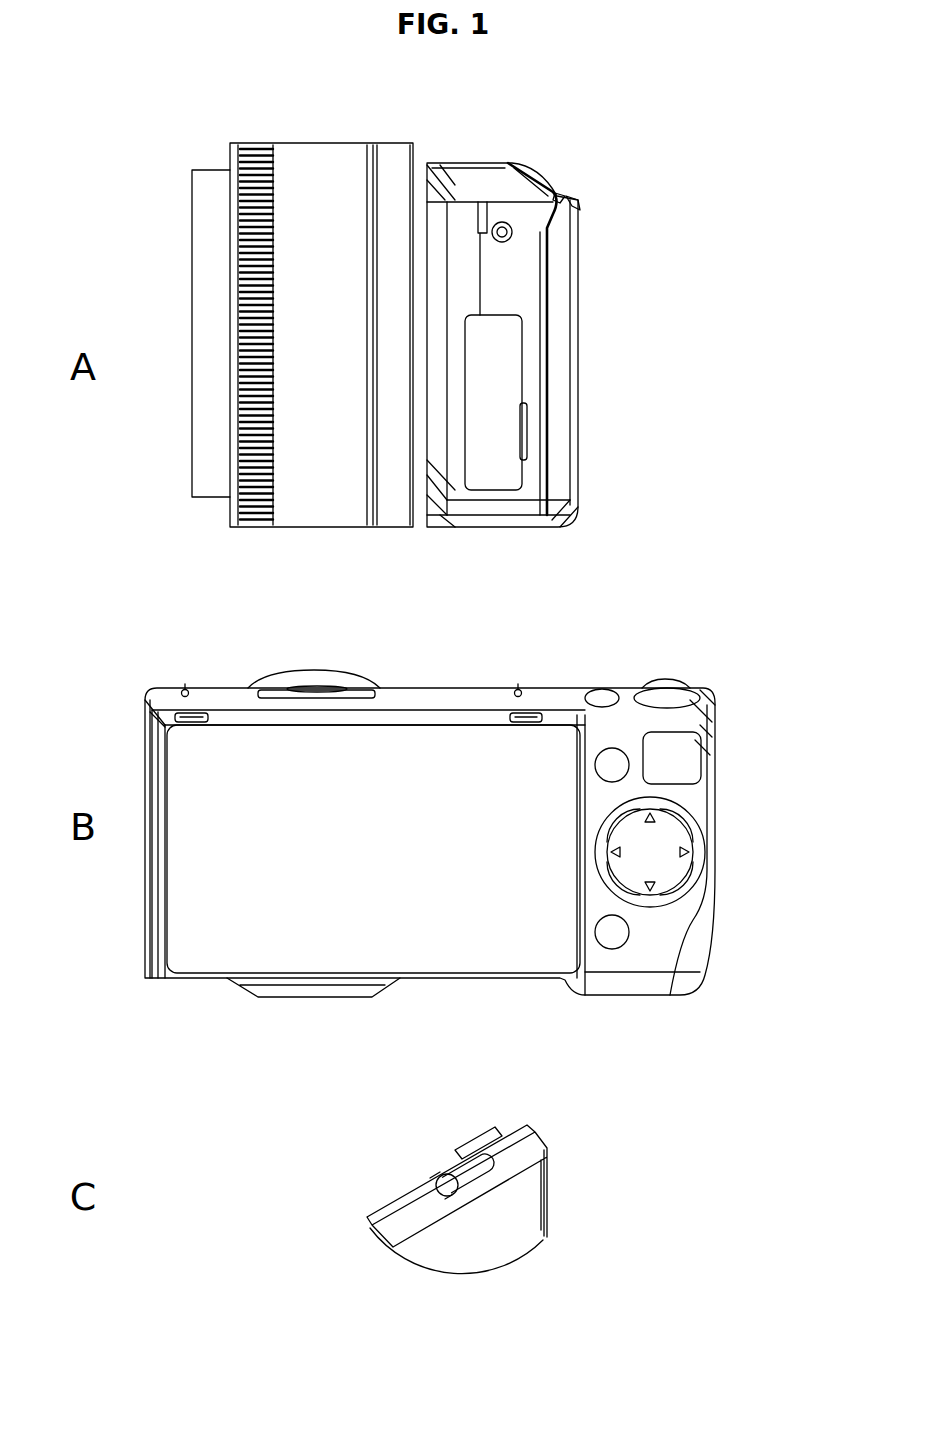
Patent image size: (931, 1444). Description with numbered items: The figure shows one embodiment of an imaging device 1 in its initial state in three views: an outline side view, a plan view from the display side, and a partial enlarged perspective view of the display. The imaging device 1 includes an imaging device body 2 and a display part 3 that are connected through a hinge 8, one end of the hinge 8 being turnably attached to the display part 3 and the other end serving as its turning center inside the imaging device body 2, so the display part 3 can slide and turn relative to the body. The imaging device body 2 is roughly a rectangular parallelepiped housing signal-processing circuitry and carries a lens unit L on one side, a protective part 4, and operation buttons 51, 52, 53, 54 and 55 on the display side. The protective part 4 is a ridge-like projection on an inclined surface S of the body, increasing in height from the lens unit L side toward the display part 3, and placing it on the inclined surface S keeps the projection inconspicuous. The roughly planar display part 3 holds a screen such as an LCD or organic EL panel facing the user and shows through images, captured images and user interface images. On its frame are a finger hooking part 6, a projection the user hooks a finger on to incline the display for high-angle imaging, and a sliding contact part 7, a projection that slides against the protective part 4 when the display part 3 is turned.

The imaging device 1 is at (655, 456).
The imaging device body 2 is at (494, 520).
The display part 3 is at (568, 372).
The protective part 4 is at (528, 163).
The finger hooking part 6 is at (200, 714).
The sliding contact part 7 is at (558, 196).
The hinge 8 is at (577, 198).
The lens unit L is at (213, 302).
The inclined surface S is at (553, 186).
The operation button 51 is at (668, 683).
The operation button 52 is at (603, 697).
The operation button 53 is at (613, 765).
The operation button 54 is at (688, 855).
The operation button 55 is at (618, 932).